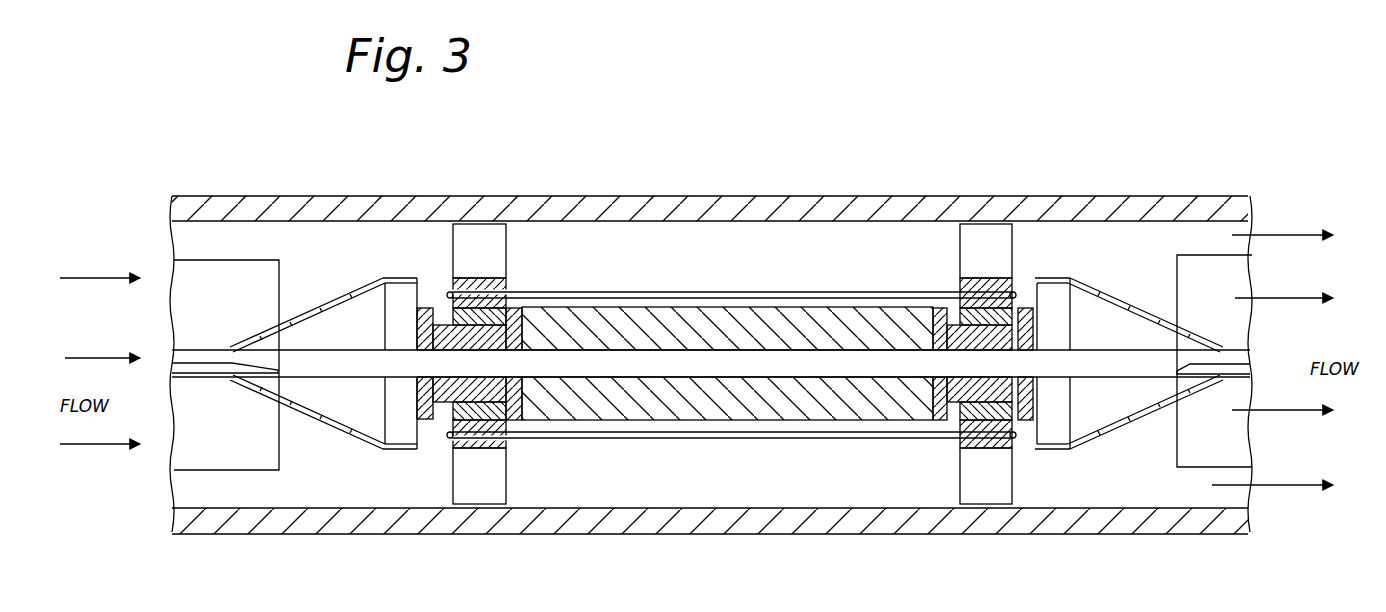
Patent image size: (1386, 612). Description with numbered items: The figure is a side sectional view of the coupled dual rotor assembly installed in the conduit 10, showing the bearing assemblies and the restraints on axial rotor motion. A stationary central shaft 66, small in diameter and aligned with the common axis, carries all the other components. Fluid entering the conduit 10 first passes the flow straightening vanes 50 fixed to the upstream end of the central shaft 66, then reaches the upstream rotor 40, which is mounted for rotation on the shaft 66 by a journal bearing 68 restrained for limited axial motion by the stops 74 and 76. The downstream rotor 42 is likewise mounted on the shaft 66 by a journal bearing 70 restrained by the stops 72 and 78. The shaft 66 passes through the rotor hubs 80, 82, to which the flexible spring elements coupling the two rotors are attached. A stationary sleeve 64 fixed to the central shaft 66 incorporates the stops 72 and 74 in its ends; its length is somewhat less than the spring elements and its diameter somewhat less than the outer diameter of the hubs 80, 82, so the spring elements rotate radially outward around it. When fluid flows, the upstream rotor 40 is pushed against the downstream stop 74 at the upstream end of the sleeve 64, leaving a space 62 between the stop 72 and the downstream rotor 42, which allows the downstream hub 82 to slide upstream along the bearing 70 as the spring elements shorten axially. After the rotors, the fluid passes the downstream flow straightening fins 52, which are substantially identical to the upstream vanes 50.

The conduit 10 is at (1207, 205).
The upstream rotor 40 is at (508, 494).
The downstream rotor 42 is at (1016, 494).
The flow straightening vanes 50 is at (236, 445).
The flow straightening fins 52 is at (1207, 445).
The space 62 is at (953, 313).
The stationary sleeve 64 is at (562, 405).
The central shaft 66 is at (367, 365).
The journal bearing 68 is at (445, 388).
The journal bearing 70 is at (955, 400).
The stop 72 is at (905, 307).
The downstream stop 74 is at (515, 325).
The stop 76 is at (425, 315).
The stop 78 is at (1025, 310).
The upstream rotor hub 80 is at (475, 278).
The downstream rotor hub 82 is at (972, 280).